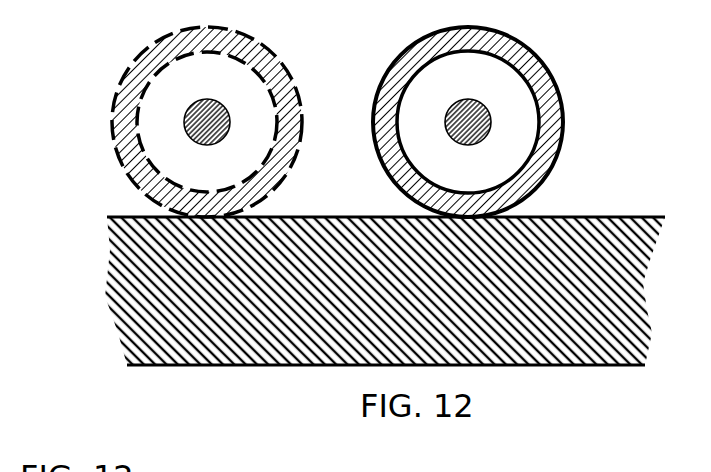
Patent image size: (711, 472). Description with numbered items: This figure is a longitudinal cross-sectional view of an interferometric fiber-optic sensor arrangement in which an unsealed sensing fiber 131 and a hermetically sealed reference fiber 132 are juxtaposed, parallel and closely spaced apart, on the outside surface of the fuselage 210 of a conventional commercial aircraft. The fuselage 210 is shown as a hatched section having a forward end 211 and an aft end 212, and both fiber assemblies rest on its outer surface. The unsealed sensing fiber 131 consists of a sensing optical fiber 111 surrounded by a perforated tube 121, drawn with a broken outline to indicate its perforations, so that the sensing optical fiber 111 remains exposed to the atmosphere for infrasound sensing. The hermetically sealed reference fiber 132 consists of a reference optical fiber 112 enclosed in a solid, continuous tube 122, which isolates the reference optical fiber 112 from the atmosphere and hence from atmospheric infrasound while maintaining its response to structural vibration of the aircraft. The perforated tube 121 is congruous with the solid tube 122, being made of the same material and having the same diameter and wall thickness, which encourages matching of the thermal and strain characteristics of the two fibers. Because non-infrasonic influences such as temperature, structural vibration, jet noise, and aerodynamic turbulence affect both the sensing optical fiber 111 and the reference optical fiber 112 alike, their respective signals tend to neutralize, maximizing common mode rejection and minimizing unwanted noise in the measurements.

The sensing optical fiber 111 is at (190, 103).
The reference optical fiber 112 is at (448, 102).
The perforated tube 121 is at (130, 157).
The solid tube 122 is at (392, 157).
The unsealed sensing fiber 131 is at (156, 122).
The hermetically sealed reference fiber 132 is at (481, 122).
The fuselage 210 is at (385, 295).
The forward end 211 is at (602, 217).
The aft end 212 is at (602, 365).